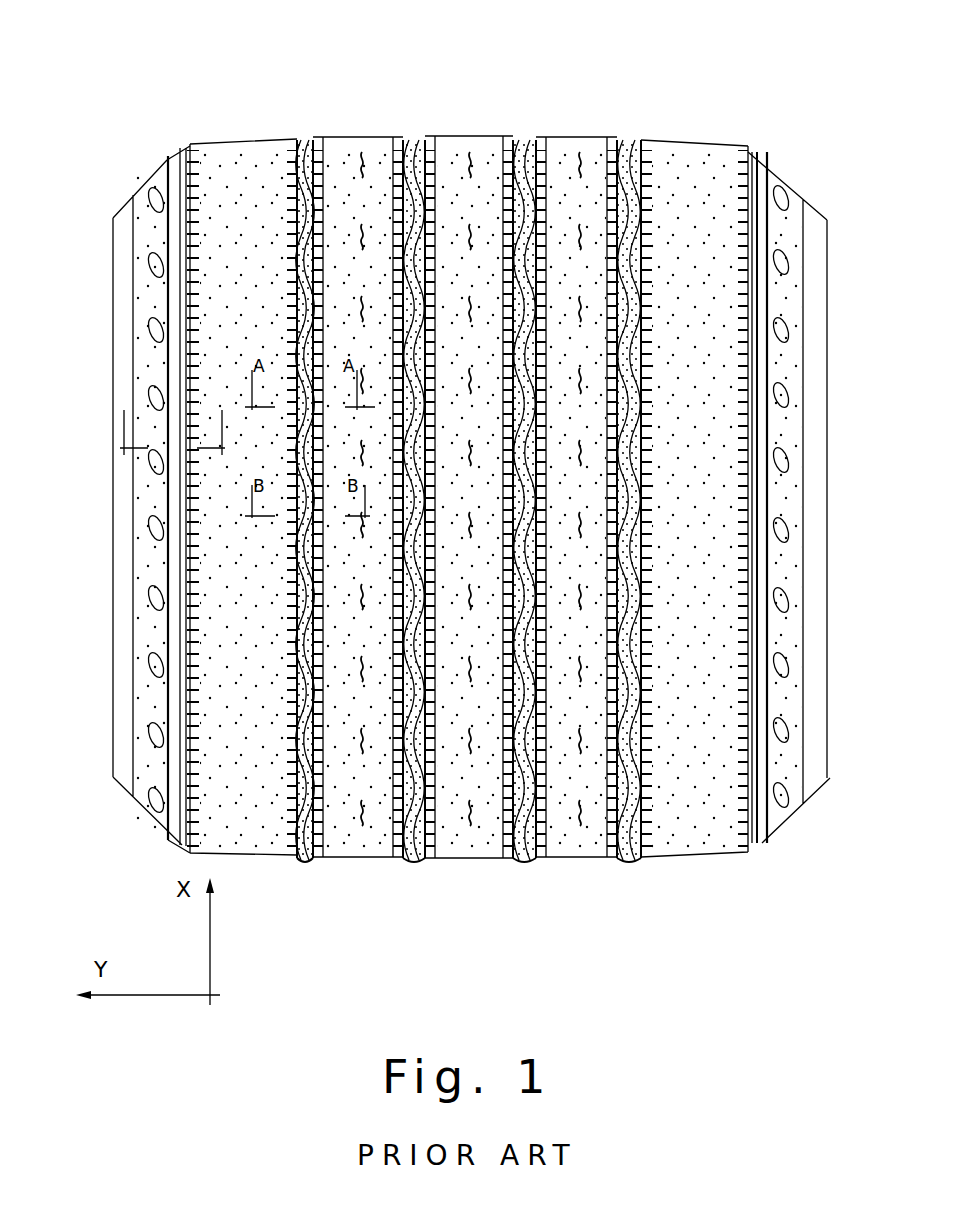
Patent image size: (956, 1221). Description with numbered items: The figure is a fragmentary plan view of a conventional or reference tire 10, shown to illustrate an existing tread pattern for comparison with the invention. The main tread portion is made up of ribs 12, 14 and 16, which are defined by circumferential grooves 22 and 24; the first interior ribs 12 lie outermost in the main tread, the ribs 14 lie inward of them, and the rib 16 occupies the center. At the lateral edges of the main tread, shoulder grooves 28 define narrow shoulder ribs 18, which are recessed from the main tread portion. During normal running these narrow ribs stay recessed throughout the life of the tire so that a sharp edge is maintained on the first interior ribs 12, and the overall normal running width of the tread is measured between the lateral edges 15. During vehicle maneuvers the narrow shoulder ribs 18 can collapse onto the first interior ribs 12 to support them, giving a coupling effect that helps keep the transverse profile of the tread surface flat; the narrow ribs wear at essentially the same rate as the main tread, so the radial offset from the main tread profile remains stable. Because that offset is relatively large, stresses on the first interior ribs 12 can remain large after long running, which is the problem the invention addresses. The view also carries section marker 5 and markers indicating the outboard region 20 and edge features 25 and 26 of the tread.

The conventional tire 10 is at (682, 98).
The first interior ribs 12 is at (225, 140).
The ribs 14 is at (376, 137).
The lateral edges 15 is at (170, 487).
The rib 16 is at (467, 137).
The narrow shoulder ribs 18 is at (172, 157).
The shoulder region 20 is at (158, 165).
The grooves 22 is at (303, 143).
The grooves 24 is at (413, 140).
The rib edge 25 is at (200, 790).
The groove edge 26 is at (397, 808).
The shoulder grooves 28 is at (182, 157).
The section line 5- 5 is at (171, 415).